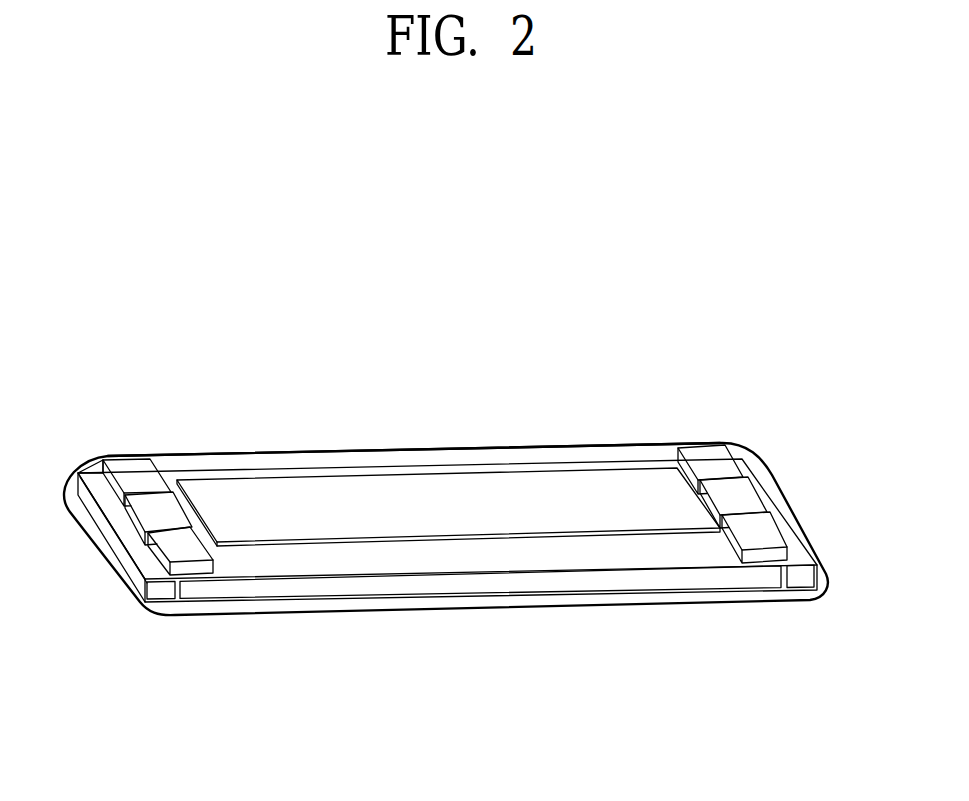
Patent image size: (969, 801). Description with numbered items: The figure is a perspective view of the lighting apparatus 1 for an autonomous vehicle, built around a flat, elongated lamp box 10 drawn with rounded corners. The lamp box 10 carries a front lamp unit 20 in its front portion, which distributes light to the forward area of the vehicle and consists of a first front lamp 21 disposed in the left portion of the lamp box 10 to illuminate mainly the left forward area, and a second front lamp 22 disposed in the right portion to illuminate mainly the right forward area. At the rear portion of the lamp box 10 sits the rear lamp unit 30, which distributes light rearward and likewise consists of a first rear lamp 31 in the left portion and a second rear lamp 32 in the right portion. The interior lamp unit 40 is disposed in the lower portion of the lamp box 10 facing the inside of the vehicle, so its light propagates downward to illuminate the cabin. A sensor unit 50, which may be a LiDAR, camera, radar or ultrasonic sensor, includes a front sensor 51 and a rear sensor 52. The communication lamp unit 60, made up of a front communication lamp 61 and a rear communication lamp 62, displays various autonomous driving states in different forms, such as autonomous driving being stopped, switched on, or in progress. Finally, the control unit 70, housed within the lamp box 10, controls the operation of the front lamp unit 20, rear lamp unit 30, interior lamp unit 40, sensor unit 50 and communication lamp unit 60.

The lighting apparatus 1 is at (815, 482).
The lamp box 10 is at (483, 448).
The front lamp unit 20 is at (277, 374).
The first front lamp 21 is at (193, 542).
The second front lamp 22 is at (142, 467).
The rear lamp unit 30 is at (683, 374).
The first rear lamp 31 is at (742, 528).
The second rear lamp 32 is at (702, 455).
The interior lamp unit 40 is at (485, 598).
The sensor unit 50 is at (422, 489).
The front sensor 51 is at (155, 507).
The rear sensor 52 is at (743, 495).
The communication lamp unit 60 is at (463, 621).
The front communication lamp 61 is at (138, 587).
The rear communication lamp 62 is at (798, 578).
The control unit 70 is at (375, 490).